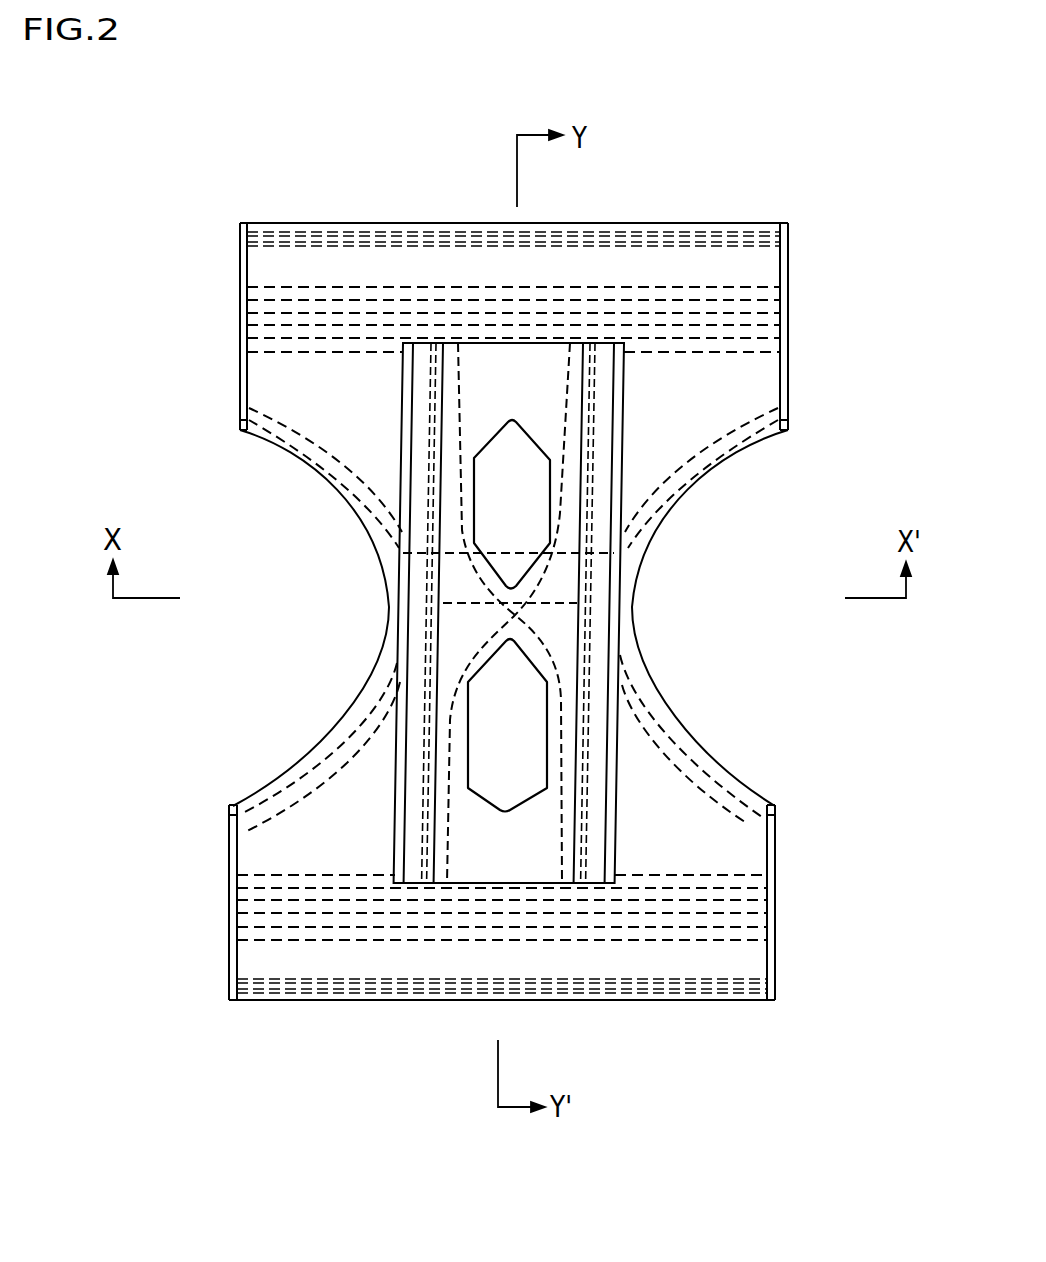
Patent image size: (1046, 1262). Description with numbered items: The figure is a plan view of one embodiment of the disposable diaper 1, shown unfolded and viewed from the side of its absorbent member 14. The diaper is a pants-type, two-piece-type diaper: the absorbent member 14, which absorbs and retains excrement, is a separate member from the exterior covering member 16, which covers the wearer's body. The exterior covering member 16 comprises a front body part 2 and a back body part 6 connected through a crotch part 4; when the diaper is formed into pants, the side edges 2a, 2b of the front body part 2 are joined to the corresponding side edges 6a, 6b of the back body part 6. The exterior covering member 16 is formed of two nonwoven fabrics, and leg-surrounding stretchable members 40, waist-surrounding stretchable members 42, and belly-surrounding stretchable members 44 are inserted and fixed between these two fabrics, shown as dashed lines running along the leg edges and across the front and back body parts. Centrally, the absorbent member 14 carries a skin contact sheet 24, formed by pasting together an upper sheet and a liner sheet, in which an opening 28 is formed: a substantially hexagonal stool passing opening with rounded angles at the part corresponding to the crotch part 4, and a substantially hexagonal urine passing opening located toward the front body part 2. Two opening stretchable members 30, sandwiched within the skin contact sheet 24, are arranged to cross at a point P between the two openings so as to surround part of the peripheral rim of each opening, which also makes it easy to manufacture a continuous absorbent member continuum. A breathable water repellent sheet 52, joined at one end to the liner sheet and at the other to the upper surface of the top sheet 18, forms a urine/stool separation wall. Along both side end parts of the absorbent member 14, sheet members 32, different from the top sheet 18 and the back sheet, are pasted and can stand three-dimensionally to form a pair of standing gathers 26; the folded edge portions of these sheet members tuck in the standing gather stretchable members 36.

The disposable diaper 1 is at (850, 148).
The front body part 2 is at (61, 808).
The side edge 2a is at (231, 910).
The side edge 2b is at (777, 918).
The crotch part 4 is at (68, 438).
The back body part 6 is at (71, 220).
The side edge 6a is at (240, 305).
The side edge 6b is at (789, 318).
The absorbent member 14 is at (622, 757).
The exterior covering member 16 is at (762, 385).
The top sheet 18 is at (530, 727).
The skin contact sheet 24 is at (478, 370).
The standing gathers 26 is at (417, 476).
The opening 28 is at (498, 536).
The opening stretchable members 30 is at (448, 847).
The sheet members 32 is at (400, 740).
The standing gather stretchable members 36 is at (430, 780).
The leg-surrounding stretchable members 40 is at (293, 433).
The waist-surrounding stretchable members 42 is at (634, 231).
The belly-surrounding stretchable members 44 is at (748, 287).
The breathable water repellent sheet 52 is at (522, 563).
The crossing point P is at (515, 616).